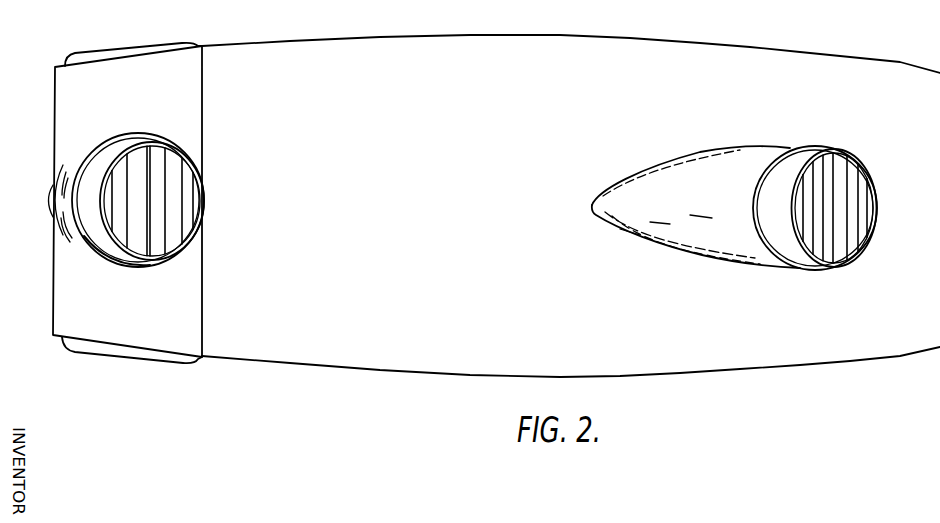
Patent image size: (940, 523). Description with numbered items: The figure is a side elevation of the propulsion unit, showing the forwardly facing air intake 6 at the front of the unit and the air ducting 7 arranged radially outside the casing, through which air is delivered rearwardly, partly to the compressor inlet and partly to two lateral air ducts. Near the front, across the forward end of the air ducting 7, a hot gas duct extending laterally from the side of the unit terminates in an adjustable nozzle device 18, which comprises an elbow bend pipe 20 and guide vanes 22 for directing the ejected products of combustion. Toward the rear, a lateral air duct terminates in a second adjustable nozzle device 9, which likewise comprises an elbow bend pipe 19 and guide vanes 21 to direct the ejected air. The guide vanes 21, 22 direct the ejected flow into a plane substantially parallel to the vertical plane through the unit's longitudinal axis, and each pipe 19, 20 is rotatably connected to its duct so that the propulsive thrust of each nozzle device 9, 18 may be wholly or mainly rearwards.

The air intake 6 is at (53, 292).
The air ducting 7 is at (681, 362).
The adjustable nozzle device 9 is at (848, 266).
The adjustable nozzle device 18 is at (140, 265).
The elbow bend pipe 19 is at (800, 157).
The elbow bend pipe 20 is at (110, 152).
The guide vanes 21 is at (847, 198).
The guide vanes 22 is at (190, 188).